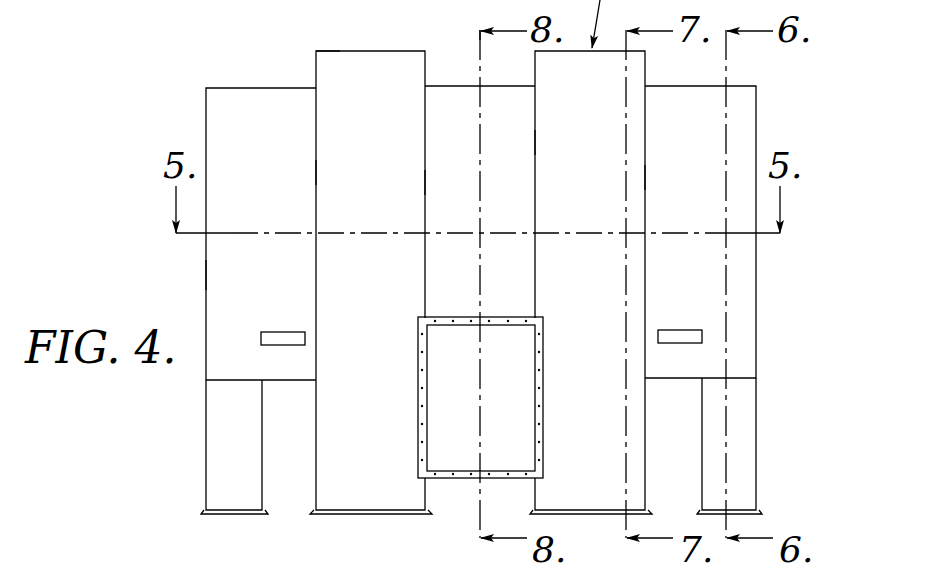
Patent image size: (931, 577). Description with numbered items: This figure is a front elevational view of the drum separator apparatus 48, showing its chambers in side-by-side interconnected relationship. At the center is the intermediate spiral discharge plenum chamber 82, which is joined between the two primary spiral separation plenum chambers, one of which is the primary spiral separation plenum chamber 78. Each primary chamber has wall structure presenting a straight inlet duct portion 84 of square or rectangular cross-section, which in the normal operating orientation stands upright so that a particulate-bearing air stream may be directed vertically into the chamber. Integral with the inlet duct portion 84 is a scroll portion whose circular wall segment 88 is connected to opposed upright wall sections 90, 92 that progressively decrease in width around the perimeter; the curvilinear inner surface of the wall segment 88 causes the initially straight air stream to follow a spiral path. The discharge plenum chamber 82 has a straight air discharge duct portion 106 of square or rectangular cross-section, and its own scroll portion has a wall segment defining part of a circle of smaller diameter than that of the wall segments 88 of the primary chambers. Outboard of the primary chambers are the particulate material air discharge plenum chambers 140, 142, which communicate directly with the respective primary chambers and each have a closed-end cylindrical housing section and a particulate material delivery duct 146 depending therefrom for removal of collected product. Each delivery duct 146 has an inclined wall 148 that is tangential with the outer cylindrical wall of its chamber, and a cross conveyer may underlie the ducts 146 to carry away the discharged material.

The drum separator apparatus 48 is at (170, 272).
The primary spiral separation plenum chamber 78 is at (316, 63).
The intermediate spiral discharge plenum chamber 82 is at (462, 85).
The inlet duct portion 84 is at (323, 480).
The circular wall segment 88 is at (479, 133).
The upright wall section 90 is at (316, 173).
The upright wall section 92 is at (425, 181).
The air discharge duct portion 106 is at (448, 480).
The particulate material air discharge plenum chamber 140 is at (206, 116).
The particulate material air discharge plenum chamber 142 is at (757, 100).
The particulate material delivery duct 146 is at (217, 462).
The inclined wall 148 is at (20, 0).